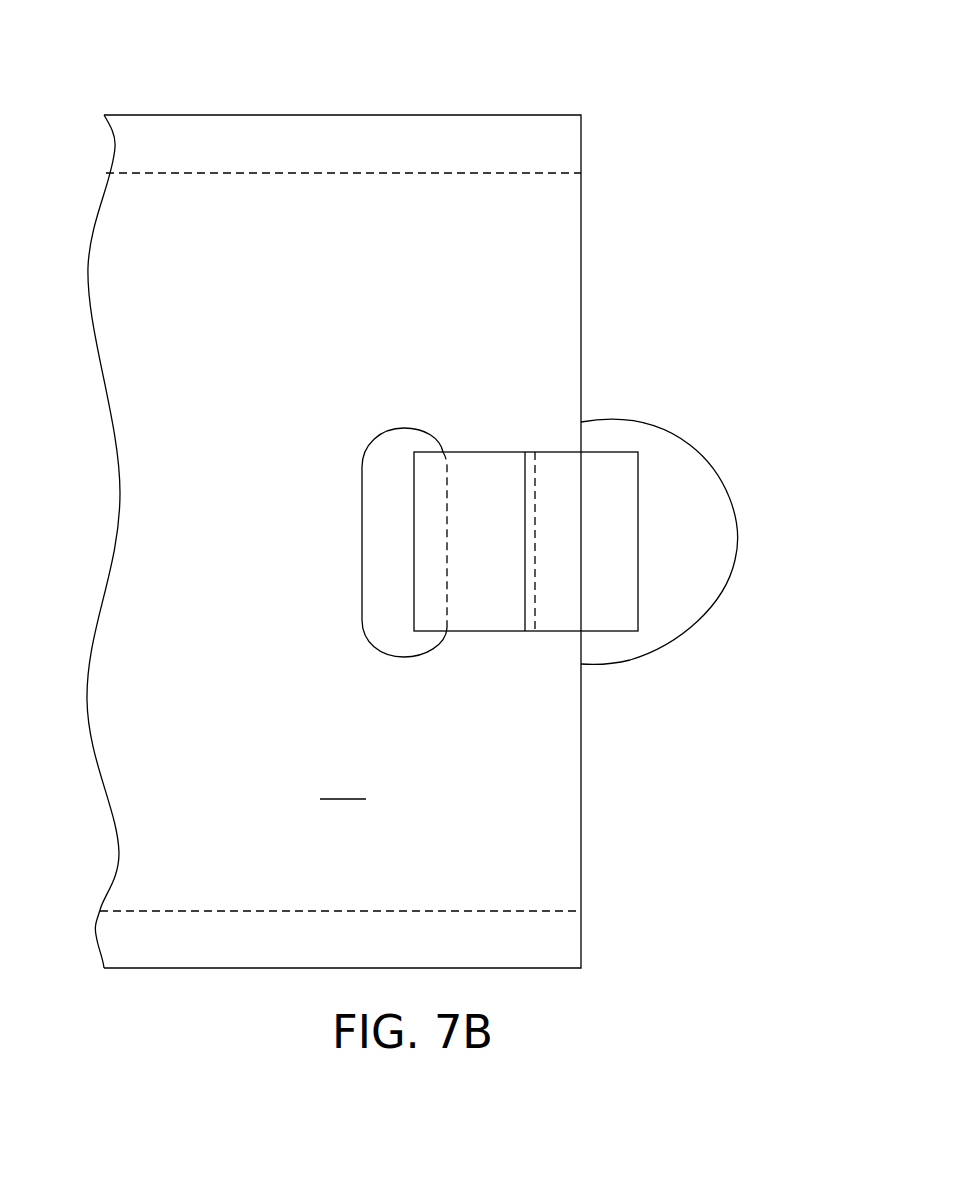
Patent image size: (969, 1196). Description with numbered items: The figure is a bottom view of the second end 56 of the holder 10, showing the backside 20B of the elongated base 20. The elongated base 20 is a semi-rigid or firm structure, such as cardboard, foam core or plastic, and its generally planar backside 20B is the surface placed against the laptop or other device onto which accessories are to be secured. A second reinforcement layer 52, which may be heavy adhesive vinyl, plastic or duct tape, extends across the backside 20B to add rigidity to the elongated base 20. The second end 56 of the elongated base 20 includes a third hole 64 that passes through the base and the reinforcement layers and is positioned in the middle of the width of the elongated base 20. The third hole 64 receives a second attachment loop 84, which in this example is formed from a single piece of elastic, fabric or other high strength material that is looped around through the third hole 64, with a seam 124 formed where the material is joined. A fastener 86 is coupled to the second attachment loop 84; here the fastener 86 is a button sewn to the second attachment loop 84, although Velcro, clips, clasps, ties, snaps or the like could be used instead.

The holder 10 is at (610, 75).
The elongated base 20 is at (255, 115).
The backside 20B is at (343, 786).
The second reinforcement layer 52 is at (565, 197).
The second end 56 is at (581, 883).
The third hole 64 is at (408, 440).
The second attachment loop 84 is at (485, 631).
The fastener 86 is at (668, 430).
The seam 124 is at (532, 460).